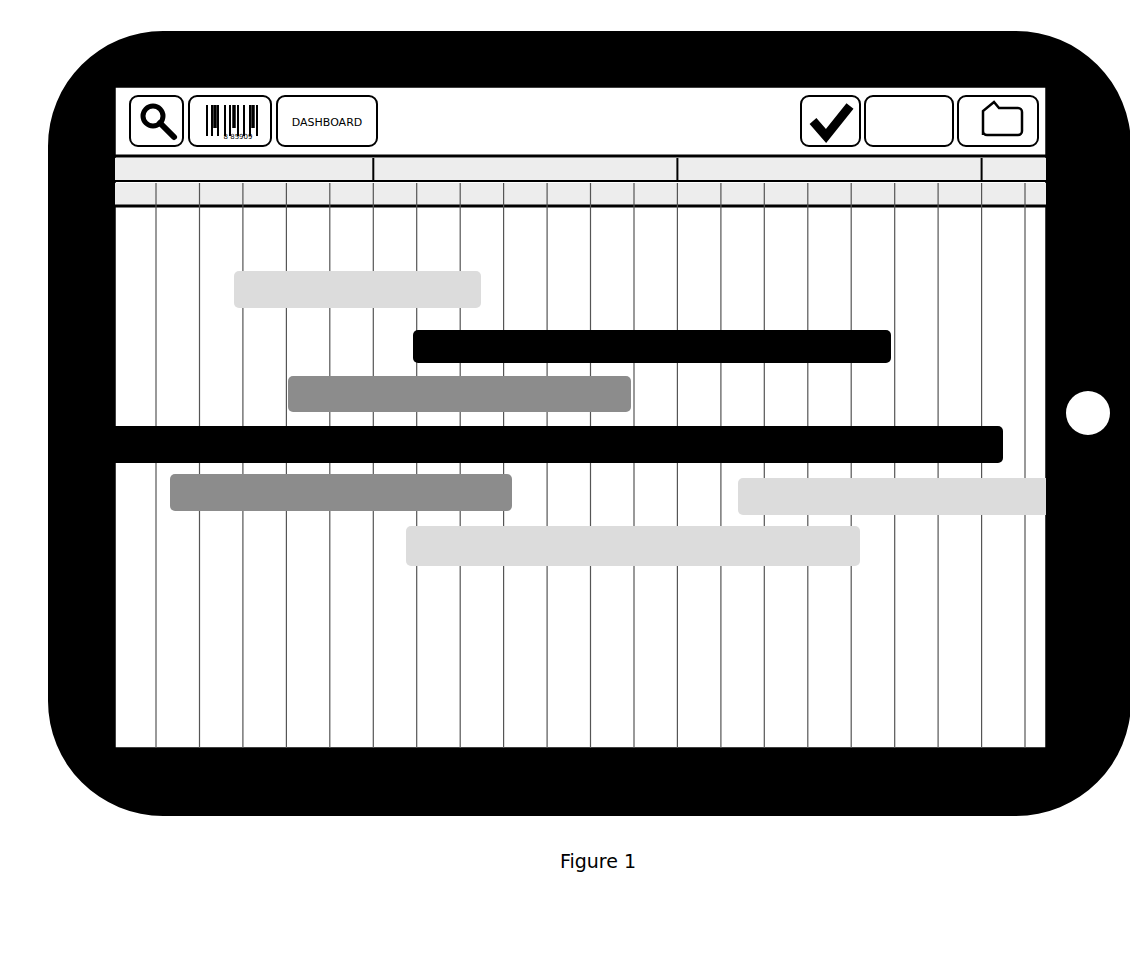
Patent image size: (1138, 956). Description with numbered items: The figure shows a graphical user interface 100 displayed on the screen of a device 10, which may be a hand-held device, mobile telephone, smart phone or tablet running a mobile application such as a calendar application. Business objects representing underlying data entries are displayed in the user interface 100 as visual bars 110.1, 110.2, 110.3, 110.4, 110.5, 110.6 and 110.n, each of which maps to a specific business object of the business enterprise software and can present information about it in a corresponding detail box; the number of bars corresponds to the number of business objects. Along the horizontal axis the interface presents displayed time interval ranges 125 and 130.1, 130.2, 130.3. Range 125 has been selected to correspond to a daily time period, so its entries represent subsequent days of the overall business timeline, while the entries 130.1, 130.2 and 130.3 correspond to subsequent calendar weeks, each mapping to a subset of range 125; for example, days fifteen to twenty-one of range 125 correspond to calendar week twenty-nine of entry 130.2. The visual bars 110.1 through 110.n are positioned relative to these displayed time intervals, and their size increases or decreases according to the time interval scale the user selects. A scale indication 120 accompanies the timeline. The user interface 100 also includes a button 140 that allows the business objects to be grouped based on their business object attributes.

The device 10 is at (1110, 742).
The graphical user interface 100 is at (580, 417).
The visual bar 110.1 is at (329, 289).
The visual bar 110.2 is at (624, 346).
The visual bar 110.3 is at (491, 394).
The visual bar 110.4 is at (888, 496).
The visual bar 110.5 is at (565, 430).
The visual bar 110.6 is at (369, 492).
The visual bar 110.n is at (662, 546).
The time axis (day scale) 120 is at (578, 465).
The displayed time interval range 125 is at (580, 190).
The entry in displayed time interval range 130.1 is at (284, 169).
The entry in displayed time interval range 130.2 is at (583, 169).
The entry in displayed time interval range 130.3 is at (881, 169).
The button 140 is at (909, 120).